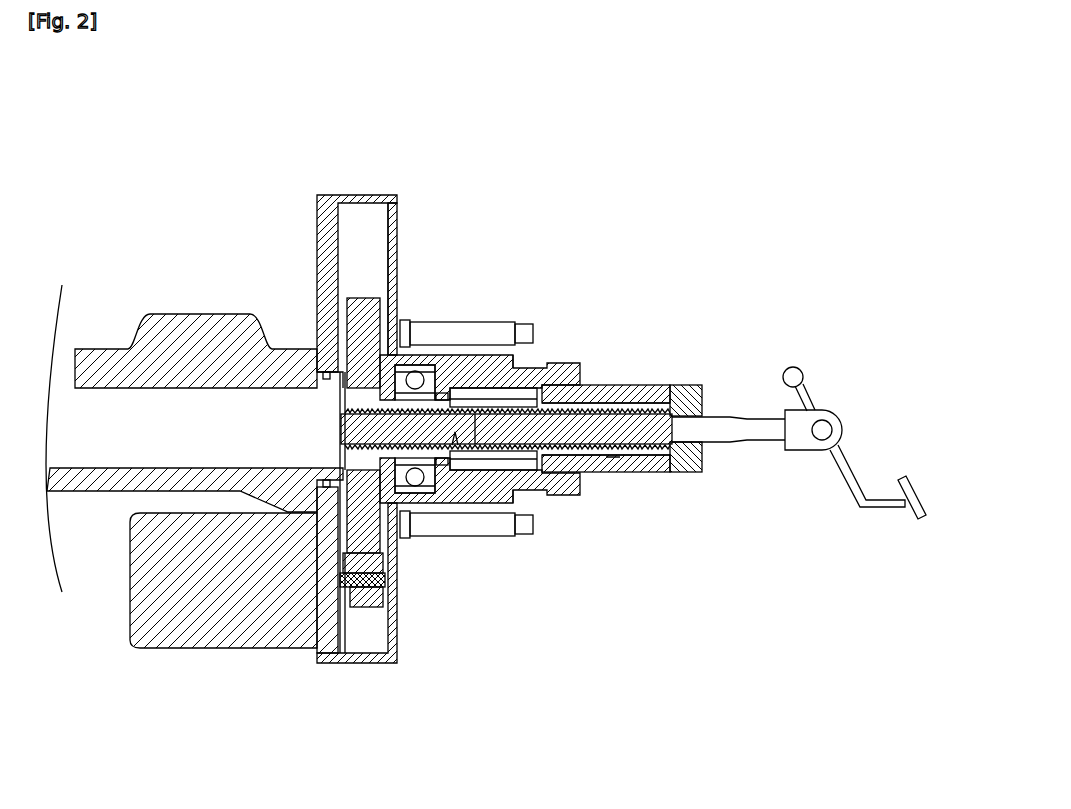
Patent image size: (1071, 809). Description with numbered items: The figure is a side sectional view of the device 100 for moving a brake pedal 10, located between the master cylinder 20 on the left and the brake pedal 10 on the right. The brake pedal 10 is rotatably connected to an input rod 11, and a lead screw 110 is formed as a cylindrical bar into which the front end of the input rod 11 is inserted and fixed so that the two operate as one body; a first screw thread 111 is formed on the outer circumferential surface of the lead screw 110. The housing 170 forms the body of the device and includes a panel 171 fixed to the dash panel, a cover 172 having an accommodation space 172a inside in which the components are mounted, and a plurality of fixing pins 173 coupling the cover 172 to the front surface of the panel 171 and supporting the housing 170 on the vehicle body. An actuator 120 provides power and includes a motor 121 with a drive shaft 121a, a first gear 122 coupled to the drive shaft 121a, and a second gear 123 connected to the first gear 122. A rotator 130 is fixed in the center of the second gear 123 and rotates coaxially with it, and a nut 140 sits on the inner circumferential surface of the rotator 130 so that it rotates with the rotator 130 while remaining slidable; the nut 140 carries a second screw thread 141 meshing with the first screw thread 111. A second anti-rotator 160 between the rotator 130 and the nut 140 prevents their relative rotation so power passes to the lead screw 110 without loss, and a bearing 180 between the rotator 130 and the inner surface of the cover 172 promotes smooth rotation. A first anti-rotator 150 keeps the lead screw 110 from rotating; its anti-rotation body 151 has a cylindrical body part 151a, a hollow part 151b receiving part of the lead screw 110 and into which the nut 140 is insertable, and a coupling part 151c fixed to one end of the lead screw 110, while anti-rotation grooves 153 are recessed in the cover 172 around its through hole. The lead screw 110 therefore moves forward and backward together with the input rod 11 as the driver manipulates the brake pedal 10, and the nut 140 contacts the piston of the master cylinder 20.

The brake pedal 10 is at (923, 522).
The input rod 11 is at (760, 418).
The master cylinder 20 is at (190, 292).
The device for moving a brake pedal 100 is at (437, 425).
The lead screw 110 is at (531, 388).
The first screw thread 111 is at (622, 412).
The actuator 120 is at (292, 494).
The motor 121 is at (215, 650).
The drive shaft 121a is at (317, 655).
The first gear 122 is at (368, 608).
The second gear 123 is at (355, 298).
The rotator 130 is at (342, 392).
The nut 140 is at (520, 458).
The second screw thread 141 is at (454, 437).
The first anti-rotator 150 is at (503, 448).
The anti-rotation body 151 is at (643, 491).
The body part 151a is at (641, 470).
The hollow part 151b is at (614, 458).
The coupling part 151c is at (707, 465).
The anti-rotation groove 153 is at (516, 480).
The second anti-rotator 160 is at (453, 390).
The housing 170 is at (397, 370).
The panel 171 is at (318, 196).
The cover 172 is at (365, 200).
The accommodation space 172a is at (373, 228).
The fixing pin 173 is at (502, 322).
The bearing 180 is at (408, 366).